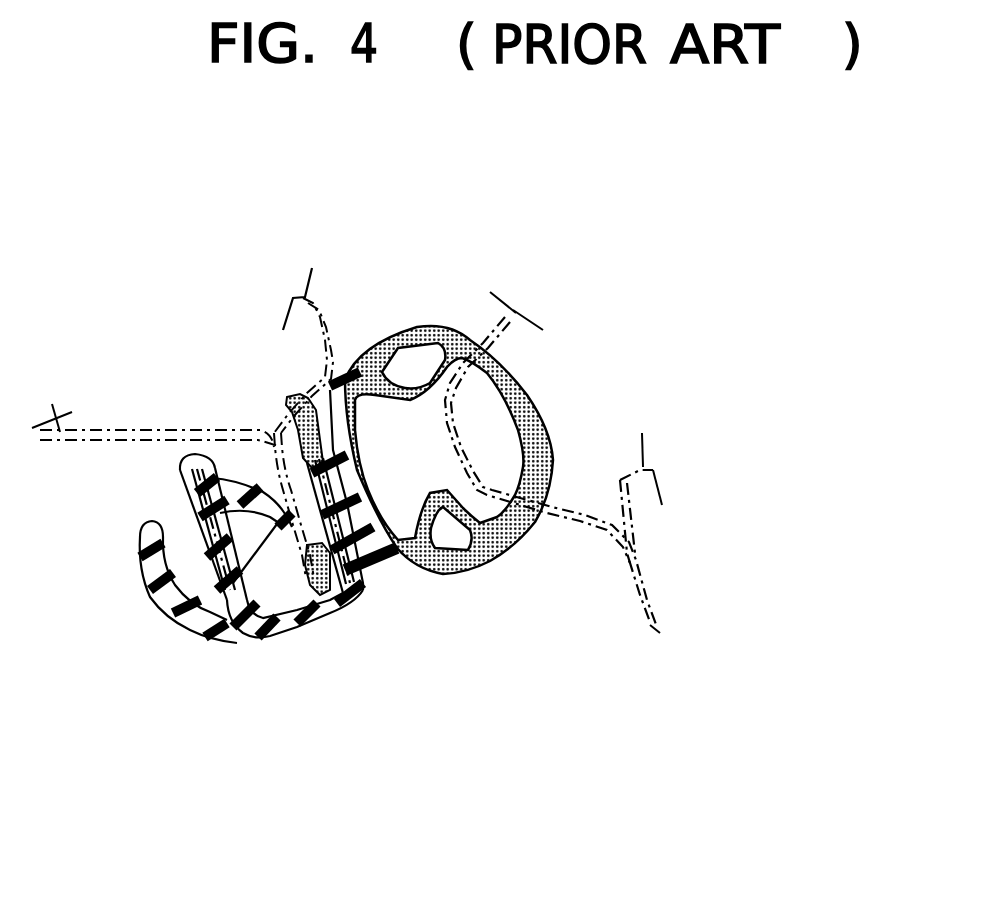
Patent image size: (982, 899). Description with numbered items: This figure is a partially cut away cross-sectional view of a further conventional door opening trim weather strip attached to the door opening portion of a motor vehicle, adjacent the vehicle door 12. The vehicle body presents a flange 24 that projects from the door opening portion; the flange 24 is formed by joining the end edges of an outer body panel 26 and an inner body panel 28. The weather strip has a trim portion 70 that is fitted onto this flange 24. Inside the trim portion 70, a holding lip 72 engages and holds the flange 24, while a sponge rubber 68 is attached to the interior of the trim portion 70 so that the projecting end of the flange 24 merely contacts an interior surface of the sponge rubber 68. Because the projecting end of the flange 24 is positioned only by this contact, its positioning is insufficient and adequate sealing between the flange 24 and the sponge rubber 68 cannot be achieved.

The vehicle door 12 is at (650, 573).
The flange 24 is at (308, 572).
The outer body panel 26 is at (320, 340).
The inner body panel 28 is at (142, 427).
The sponge rubber 68 is at (350, 625).
The trim portion 70 is at (300, 632).
The holding lip 72 is at (197, 637).